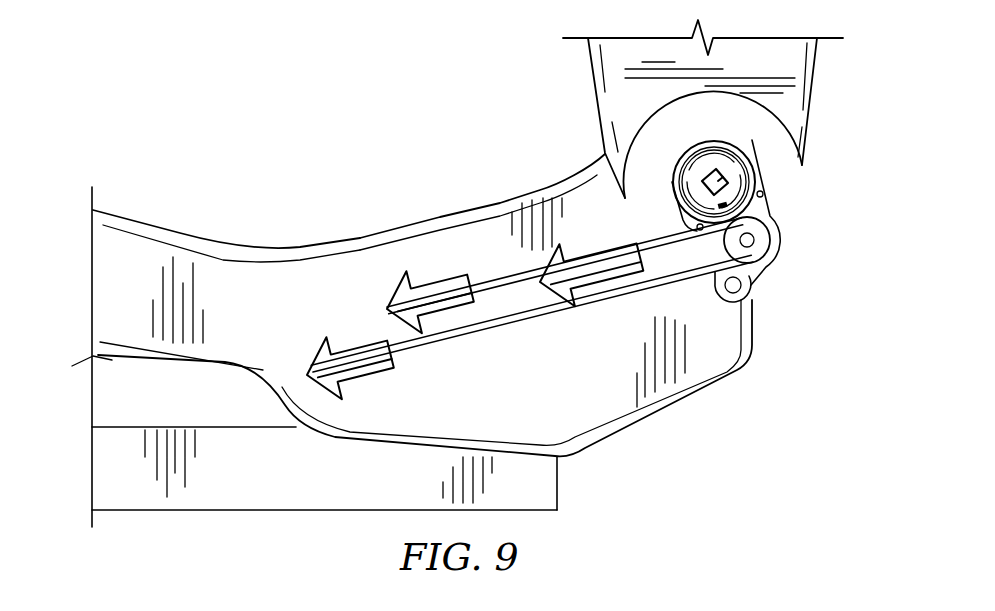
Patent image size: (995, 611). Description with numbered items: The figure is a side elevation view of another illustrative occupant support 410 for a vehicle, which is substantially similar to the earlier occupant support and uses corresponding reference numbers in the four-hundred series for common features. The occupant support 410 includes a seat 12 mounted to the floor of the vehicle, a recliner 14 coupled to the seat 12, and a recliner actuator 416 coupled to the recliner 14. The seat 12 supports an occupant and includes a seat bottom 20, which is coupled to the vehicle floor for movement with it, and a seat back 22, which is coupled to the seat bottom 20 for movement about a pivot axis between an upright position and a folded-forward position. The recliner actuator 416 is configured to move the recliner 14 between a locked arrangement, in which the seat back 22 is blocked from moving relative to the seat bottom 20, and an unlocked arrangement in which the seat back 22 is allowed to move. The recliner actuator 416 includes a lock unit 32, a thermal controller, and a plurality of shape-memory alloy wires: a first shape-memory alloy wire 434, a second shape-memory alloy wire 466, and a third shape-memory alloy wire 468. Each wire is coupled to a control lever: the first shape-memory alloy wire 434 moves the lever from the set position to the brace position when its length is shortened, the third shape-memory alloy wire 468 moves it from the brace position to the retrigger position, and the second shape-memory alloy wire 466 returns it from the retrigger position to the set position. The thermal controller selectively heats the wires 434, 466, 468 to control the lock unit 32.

The occupant support 410 is at (156, 102).
The seat 12 is at (334, 182).
The seat bottom 20 is at (162, 210).
The seat back 22 is at (582, 64).
The recliner 14 is at (723, 172).
The lock unit 32 is at (787, 191).
The first shape-memory alloy wire 434 is at (640, 258).
The second shape-memory alloy wire 466 is at (546, 320).
The third shape-memory alloy wire 468 is at (490, 280).
The recliner actuator 416 is at (722, 334).